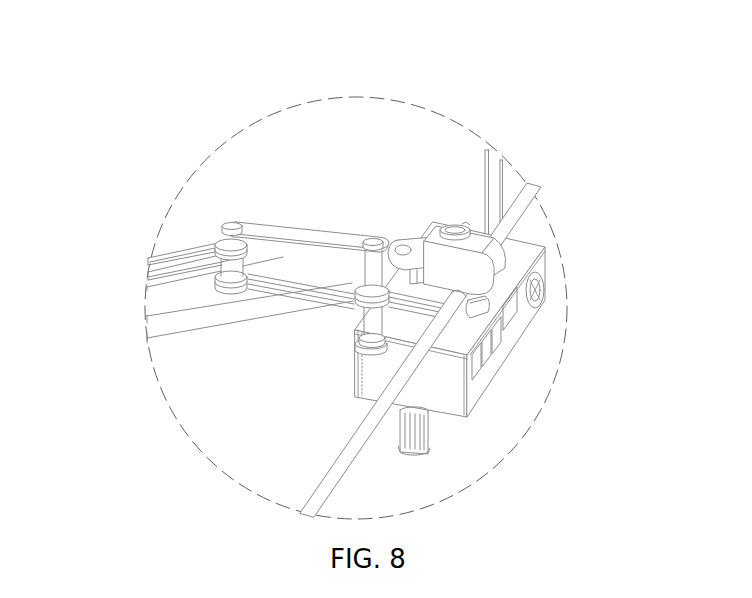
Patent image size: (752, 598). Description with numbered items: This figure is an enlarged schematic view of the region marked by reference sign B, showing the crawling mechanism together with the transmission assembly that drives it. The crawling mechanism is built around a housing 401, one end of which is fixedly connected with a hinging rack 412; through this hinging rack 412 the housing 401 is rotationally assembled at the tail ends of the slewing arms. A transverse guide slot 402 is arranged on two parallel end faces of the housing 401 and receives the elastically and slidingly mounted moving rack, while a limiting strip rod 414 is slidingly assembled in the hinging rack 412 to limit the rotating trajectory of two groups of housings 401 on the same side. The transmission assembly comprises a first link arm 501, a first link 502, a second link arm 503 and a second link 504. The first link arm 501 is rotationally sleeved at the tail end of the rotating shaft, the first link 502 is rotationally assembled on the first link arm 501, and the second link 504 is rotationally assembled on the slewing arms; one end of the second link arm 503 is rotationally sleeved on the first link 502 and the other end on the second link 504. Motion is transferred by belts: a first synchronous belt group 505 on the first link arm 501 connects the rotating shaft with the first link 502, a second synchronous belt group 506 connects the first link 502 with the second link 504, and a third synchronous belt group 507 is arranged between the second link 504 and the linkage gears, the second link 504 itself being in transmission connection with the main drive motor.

The reference sign B is at (213, 150).
The housing 401 is at (473, 403).
The transverse guide slot 402 is at (483, 312).
The hinging rack 412 is at (463, 263).
The limiting strip rod 414 is at (522, 215).
The first link arm 501 is at (413, 313).
The first link 502 is at (363, 315).
The second link arm 503 is at (245, 225).
The second link 504 is at (228, 242).
The first synchronous belt group 505 is at (357, 347).
The second synchronous belt group 506 is at (348, 287).
The third synchronous belt group 507 is at (170, 270).